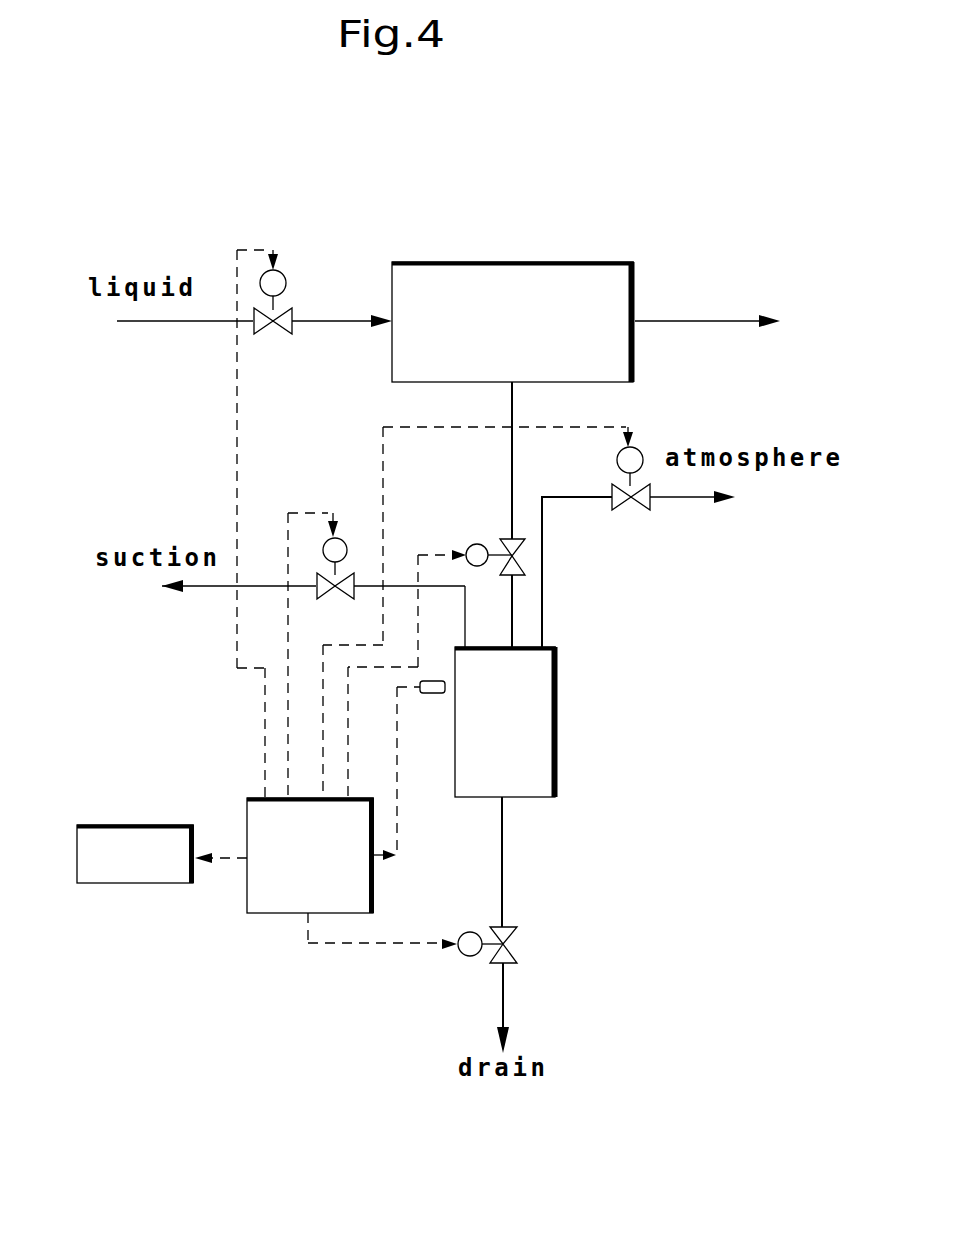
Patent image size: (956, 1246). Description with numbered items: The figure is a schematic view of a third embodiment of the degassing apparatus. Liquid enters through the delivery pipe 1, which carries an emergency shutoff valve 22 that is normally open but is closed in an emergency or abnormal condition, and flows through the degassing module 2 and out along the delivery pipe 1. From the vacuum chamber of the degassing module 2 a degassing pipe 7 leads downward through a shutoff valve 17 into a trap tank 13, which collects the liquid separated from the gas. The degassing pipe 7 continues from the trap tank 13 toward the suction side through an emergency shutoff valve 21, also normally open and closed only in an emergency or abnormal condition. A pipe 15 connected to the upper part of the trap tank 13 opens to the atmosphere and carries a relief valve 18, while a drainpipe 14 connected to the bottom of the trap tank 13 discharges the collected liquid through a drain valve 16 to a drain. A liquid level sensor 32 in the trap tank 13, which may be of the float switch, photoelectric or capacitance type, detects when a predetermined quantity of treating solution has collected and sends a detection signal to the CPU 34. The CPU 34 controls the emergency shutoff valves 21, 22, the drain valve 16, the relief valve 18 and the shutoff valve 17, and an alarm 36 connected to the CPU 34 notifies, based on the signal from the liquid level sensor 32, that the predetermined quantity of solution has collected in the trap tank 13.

The delivery pipe 1 is at (329, 319).
The degassing module 2 is at (498, 262).
The degassing pipe 7 is at (510, 452).
The trap tank 13 is at (538, 720).
The drainpipe 14 is at (503, 830).
The pipe 15 is at (545, 593).
The drain valve 16 is at (515, 958).
The shutoff valve 17 is at (510, 540).
The relief valve 18 is at (638, 513).
The emergency shutoff valve 21 is at (342, 574).
The emergency shutoff valve 22 is at (280, 336).
The liquid level sensor 32 is at (433, 693).
The CPU 34 is at (278, 907).
The alarm 36 is at (150, 876).